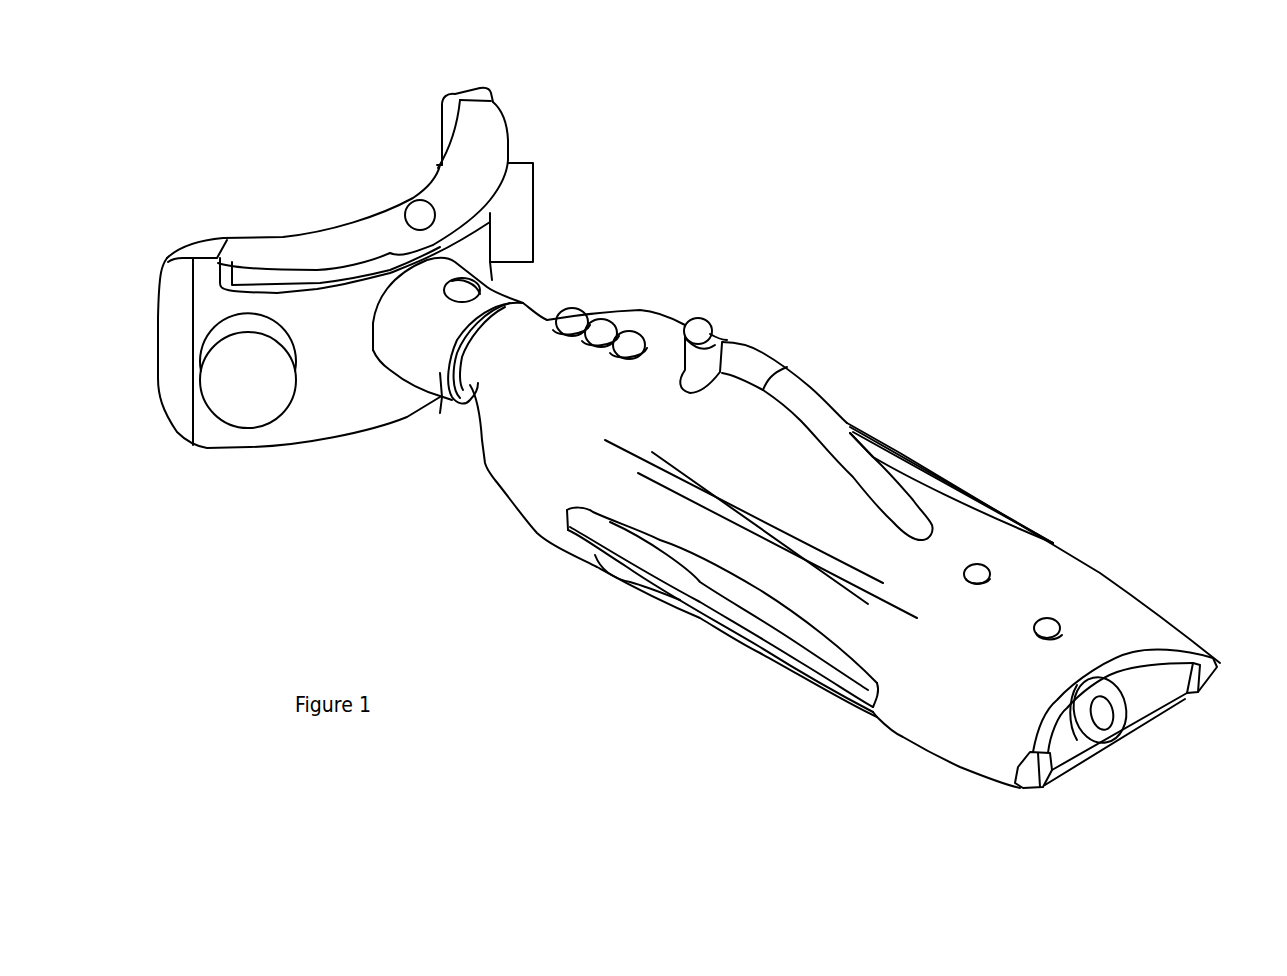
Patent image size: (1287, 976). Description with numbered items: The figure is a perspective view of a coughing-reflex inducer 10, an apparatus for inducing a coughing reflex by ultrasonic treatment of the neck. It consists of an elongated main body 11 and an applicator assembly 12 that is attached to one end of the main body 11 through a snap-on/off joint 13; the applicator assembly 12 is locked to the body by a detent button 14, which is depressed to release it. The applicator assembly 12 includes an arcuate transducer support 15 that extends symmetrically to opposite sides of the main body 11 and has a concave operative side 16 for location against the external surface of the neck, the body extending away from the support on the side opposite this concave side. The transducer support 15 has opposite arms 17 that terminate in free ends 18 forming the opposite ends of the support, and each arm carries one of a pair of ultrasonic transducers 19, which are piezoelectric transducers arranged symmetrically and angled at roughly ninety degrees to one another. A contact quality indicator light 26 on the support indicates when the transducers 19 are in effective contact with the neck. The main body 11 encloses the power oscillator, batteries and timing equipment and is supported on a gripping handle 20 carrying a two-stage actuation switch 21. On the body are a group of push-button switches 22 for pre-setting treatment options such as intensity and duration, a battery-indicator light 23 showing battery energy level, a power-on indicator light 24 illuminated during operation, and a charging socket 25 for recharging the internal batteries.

The coughing-reflex inducer 10 is at (1090, 157).
The main body 11 is at (713, 617).
The applicator assembly 12 is at (570, 82).
The snap-on/off joint 13 is at (440, 410).
The detent button 14 is at (480, 293).
The transducer support 15 is at (352, 420).
The concave operative side 16 is at (313, 180).
The arms 17 is at (508, 137).
The free ends 18 is at (453, 90).
The ultrasonic transducers 19 is at (517, 208).
The gripping handle 20 is at (790, 393).
The two-stage actuation switch 21 is at (700, 325).
The push-button switches 22 is at (602, 330).
The battery-indicator light 23 is at (1067, 633).
The power-on indicator light 24 is at (987, 577).
The charging socket 25 is at (1120, 708).
The contact quality indicator light 26 is at (423, 215).